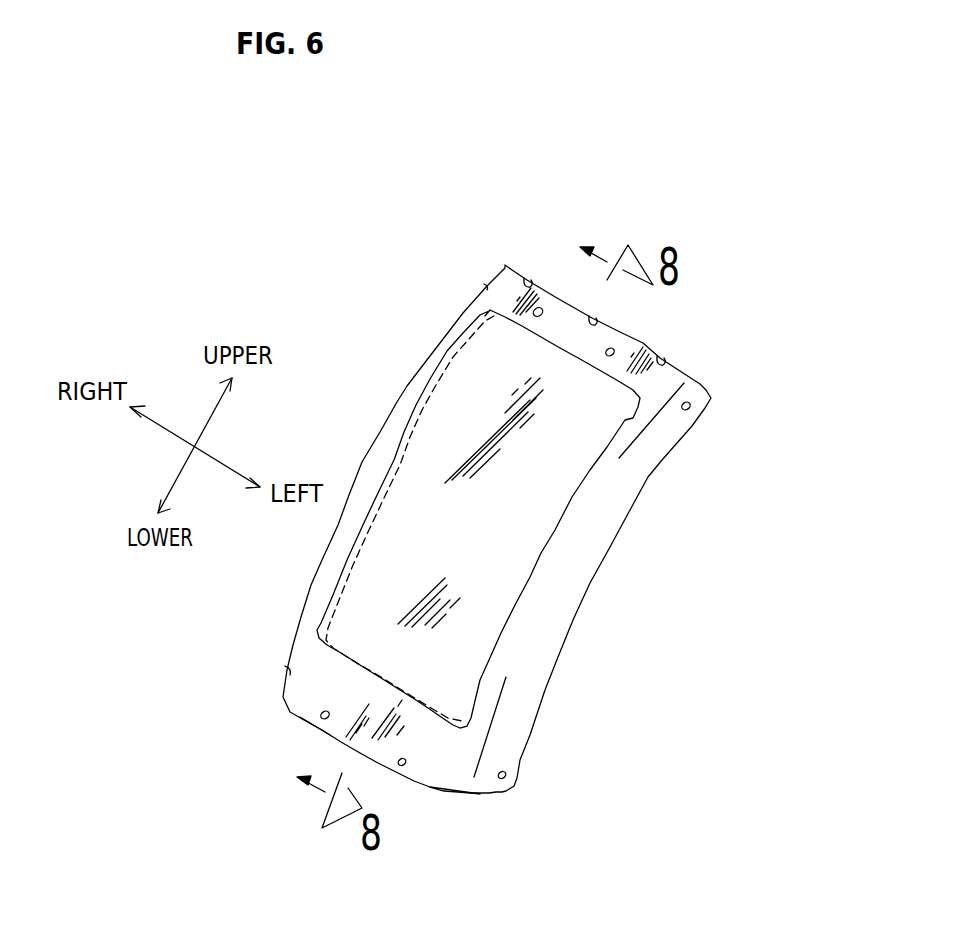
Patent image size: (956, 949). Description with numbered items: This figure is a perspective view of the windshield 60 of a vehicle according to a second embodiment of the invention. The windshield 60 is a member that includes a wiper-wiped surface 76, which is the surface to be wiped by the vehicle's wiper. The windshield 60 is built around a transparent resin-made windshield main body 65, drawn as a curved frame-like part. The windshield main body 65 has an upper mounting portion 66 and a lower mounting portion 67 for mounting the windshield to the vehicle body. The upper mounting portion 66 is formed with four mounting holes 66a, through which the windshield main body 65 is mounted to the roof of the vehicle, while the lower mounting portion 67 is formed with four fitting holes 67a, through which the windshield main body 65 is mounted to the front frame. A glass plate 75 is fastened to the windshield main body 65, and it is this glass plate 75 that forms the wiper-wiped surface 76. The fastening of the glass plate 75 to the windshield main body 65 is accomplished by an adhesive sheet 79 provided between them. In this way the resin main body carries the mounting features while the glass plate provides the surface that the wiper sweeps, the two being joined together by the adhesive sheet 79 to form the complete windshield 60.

The windshield 60 is at (795, 456).
The windshield main body 65 is at (648, 477).
The upper mounting portion 66 is at (643, 343).
The mounting holes 66a is at (538, 307).
The lower mounting portion 67 is at (433, 772).
The fitting holes 67a is at (311, 717).
The glass plate 75 is at (530, 577).
The wiper-wiped surface 76 is at (443, 426).
The adhesive sheet 79 is at (500, 637).